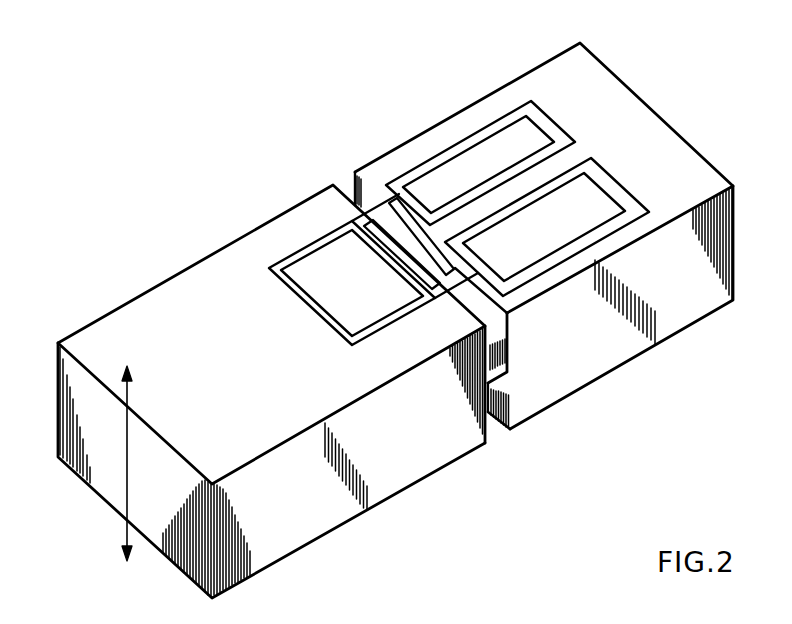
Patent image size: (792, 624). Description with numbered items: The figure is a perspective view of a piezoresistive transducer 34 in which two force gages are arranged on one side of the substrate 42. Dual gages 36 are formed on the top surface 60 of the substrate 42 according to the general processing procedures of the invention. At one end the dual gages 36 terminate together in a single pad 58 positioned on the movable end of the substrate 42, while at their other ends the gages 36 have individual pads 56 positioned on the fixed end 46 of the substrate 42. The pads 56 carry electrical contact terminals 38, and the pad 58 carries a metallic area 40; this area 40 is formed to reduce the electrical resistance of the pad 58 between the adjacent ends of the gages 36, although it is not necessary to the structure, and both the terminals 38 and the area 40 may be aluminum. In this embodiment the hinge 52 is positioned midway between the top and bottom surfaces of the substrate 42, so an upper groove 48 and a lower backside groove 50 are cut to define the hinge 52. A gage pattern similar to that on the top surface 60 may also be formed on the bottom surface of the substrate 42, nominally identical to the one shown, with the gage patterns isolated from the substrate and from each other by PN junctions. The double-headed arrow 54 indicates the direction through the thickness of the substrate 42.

The piezoresistive transducer 34 is at (667, 120).
The dual gages 36 is at (384, 228).
The electrical contact terminals 38 is at (536, 228).
The metallic area 40 is at (323, 273).
The substrate 42 is at (390, 457).
The fixed end 46 is at (685, 296).
The upper groove 48 is at (494, 328).
The lower backside groove 50 is at (493, 426).
The hinge 52 is at (503, 378).
The thickness direction 54 is at (127, 473).
The individual pads 56 is at (557, 139).
The pad 58 is at (317, 307).
The top surface 60 is at (138, 312).